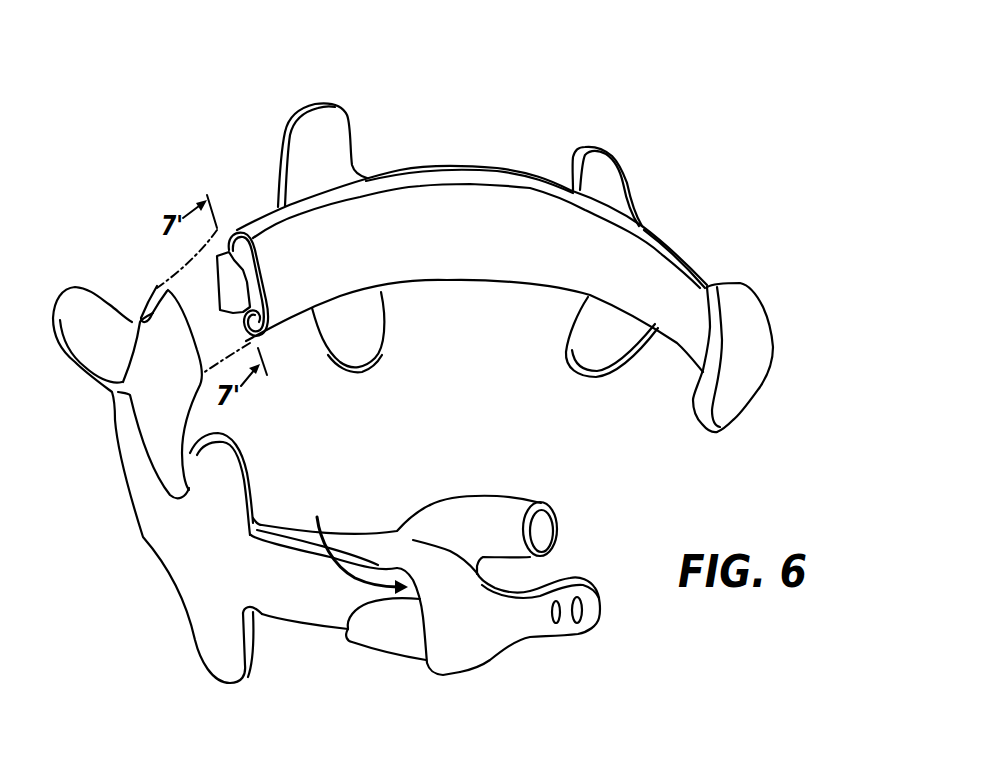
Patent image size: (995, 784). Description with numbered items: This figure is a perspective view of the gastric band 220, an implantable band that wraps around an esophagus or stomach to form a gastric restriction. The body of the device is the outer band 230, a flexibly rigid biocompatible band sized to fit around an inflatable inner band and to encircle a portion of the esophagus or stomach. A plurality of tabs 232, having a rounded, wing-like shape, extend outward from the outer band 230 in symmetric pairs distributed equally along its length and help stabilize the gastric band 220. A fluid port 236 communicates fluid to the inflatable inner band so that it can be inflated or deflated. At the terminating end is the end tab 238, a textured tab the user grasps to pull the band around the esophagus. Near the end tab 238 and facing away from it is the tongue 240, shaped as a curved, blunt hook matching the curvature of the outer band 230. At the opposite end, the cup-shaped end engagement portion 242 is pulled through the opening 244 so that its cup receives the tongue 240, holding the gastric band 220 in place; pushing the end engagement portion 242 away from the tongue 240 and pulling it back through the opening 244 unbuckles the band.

The gastric band 220 is at (532, 98).
The outer band 230 is at (289, 597).
The tabs 232 is at (212, 642).
The fluid port 236 is at (502, 523).
The end tab 238 is at (565, 623).
The tongue 240 is at (373, 635).
The end engagement portion 242 is at (752, 362).
The opening 244 is at (310, 513).